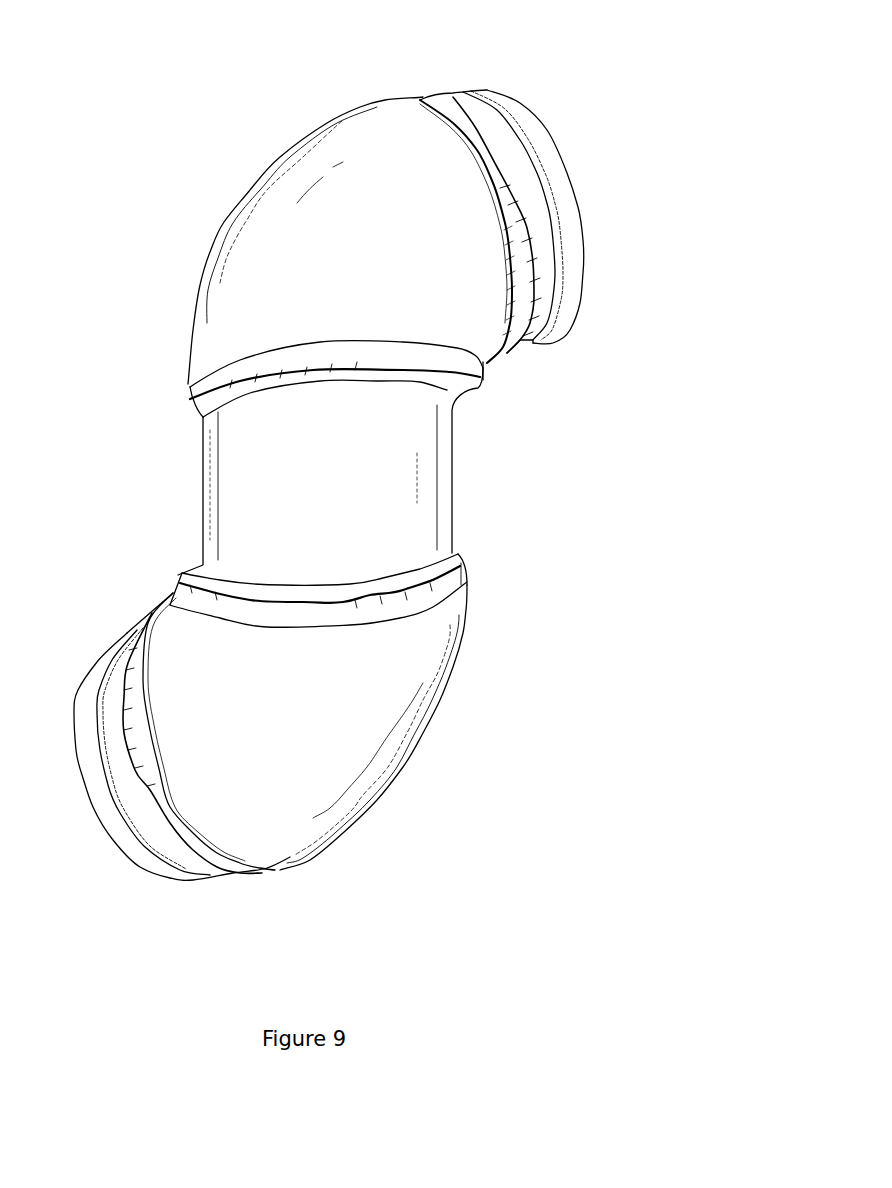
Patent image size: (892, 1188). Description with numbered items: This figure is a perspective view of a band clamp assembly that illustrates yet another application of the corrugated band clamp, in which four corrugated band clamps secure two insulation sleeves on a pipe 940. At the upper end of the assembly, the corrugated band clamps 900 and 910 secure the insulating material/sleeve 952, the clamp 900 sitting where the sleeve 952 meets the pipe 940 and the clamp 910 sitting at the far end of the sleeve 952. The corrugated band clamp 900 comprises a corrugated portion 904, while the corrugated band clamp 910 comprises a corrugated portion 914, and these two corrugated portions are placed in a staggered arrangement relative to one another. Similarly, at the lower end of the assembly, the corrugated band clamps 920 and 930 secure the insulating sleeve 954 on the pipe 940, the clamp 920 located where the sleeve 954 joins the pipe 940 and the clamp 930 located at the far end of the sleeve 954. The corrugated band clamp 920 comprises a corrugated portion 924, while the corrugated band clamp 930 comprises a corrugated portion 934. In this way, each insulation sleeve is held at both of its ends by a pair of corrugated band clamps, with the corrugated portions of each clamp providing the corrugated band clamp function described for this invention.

The corrugated band clamp 900 is at (370, 491).
The corrugated band clamp 910 is at (470, 128).
The corrugated portion 914 is at (520, 277).
The insulating material/sleeve 952 is at (333, 253).
The corrugated portion 904 is at (200, 388).
The pipe 940 is at (367, 500).
The corrugated band clamp 920 is at (450, 585).
The corrugated portion 924 is at (343, 600).
The insulating sleeve 954 is at (378, 725).
The corrugated band clamp 930 is at (232, 862).
The corrugated portion 934 is at (128, 697).